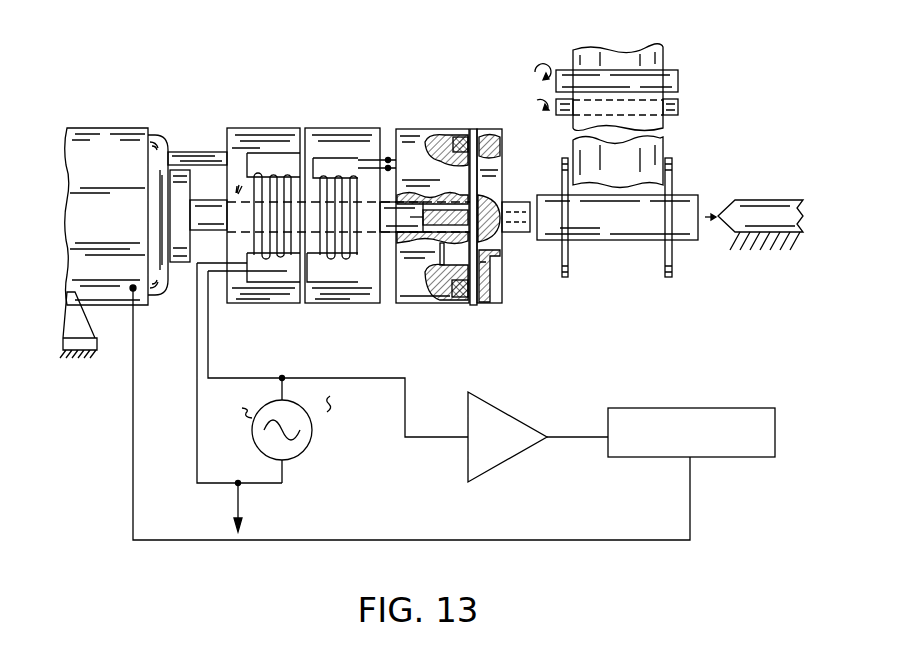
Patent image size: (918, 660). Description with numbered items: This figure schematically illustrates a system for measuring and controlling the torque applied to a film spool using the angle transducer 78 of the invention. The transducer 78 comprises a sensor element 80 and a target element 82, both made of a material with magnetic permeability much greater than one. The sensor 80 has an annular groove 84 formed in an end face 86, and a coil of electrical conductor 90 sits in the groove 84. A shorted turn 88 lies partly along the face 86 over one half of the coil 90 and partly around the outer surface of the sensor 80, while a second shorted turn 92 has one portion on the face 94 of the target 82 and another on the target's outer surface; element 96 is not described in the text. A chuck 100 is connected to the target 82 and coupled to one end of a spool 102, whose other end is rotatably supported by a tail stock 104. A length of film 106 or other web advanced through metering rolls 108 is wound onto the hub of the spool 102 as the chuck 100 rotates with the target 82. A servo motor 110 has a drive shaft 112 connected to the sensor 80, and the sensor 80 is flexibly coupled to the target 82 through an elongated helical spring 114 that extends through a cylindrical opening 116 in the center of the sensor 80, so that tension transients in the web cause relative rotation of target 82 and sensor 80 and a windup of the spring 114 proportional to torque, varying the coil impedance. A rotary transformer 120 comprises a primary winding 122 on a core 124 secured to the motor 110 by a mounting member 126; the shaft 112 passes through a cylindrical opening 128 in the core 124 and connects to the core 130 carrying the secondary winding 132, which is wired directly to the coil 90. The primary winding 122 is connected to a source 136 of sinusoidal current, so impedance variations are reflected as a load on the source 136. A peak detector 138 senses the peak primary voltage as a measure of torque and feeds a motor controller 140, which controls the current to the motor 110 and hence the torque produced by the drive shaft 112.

The transducer 78 is at (468, 80).
The sensor element 80 is at (405, 128).
The target element 82 is at (488, 128).
The annular groove 84 is at (452, 300).
The end face 86 is at (482, 302).
The shorted turn 88 is at (466, 135).
The coil 90 is at (456, 136).
The shorted turn 92 is at (475, 128).
The face 94 is at (500, 262).
The bearing 96 is at (490, 185).
The chuck 100 is at (519, 240).
The spool 102 is at (698, 242).
The tail stock 104 is at (740, 205).
The film 106 is at (668, 126).
The metering rolls 108 is at (676, 80).
The servo motor 110 is at (130, 292).
The drive shaft 112 is at (208, 216).
The spring 114 is at (498, 205).
The cylindrical opening 116 is at (425, 262).
The rotary transformer 120 is at (300, 312).
The primary winding 122 is at (265, 262).
The core 124 is at (278, 138).
The mounting member 126 is at (190, 150).
The cylindrical opening 128 is at (237, 192).
The core 130 is at (330, 140).
The secondary winding 132 is at (343, 176).
The source 136 is at (308, 450).
The peak detector 138 is at (518, 418).
The motor controller 140 is at (692, 408).